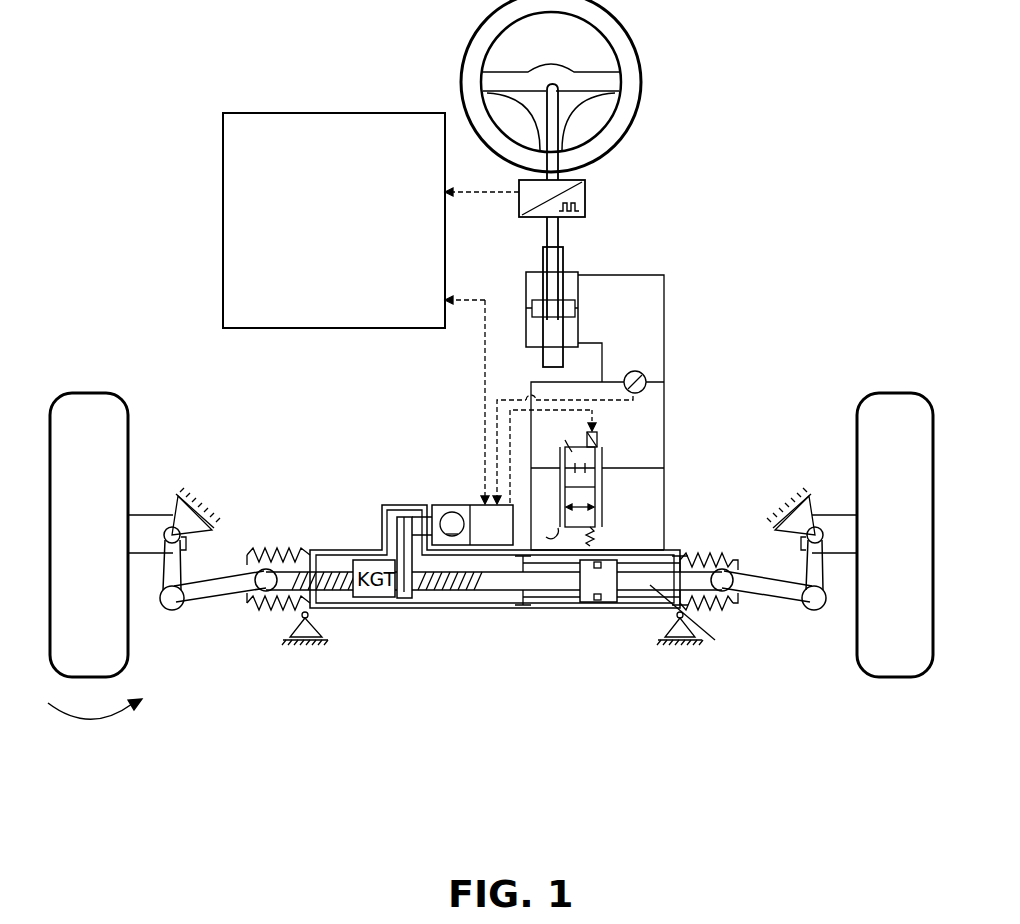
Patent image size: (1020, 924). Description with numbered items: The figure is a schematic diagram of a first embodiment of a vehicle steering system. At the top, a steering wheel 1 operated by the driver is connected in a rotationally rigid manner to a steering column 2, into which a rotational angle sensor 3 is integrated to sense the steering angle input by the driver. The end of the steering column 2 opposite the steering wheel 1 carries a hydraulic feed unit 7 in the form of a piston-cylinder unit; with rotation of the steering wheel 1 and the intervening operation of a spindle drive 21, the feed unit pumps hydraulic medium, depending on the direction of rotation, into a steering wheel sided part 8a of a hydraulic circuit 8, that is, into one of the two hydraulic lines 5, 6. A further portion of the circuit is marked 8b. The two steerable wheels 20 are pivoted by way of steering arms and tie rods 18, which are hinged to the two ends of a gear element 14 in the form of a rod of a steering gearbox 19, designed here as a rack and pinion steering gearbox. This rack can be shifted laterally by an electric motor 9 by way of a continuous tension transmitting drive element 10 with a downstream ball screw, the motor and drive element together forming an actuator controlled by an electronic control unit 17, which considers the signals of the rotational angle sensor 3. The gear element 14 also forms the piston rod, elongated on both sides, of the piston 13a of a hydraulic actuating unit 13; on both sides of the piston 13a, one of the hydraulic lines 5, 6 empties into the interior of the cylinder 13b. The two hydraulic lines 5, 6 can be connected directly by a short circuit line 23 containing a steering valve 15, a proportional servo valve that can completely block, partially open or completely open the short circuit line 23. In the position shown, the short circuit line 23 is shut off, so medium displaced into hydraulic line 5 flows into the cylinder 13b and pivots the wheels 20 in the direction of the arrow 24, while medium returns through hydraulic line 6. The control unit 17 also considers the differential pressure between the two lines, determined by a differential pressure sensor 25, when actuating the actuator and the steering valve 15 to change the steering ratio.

The steering wheel 1 is at (635, 78).
The steering column 2 is at (556, 140).
The rotational angle sensor 3 is at (586, 195).
The spindle drive 21 is at (556, 237).
The hydraulic feed unit 7 is at (585, 309).
The hydraulic line 5 is at (604, 358).
The hydraulic line 6 is at (668, 361).
The hydraulic circuit 8 is at (607, 410).
The steering wheel sided part of hydraulic circuit 8a is at (655, 312).
The hydraulic line 8b is at (652, 512).
The differential pressure sensor 25 is at (648, 382).
The short circuit line 23 is at (640, 466).
The steering valve 15 is at (566, 446).
The electric motor 9 is at (428, 498).
The tension transmitting drive element 10 is at (404, 598).
The steering gearbox 19 is at (452, 616).
The hydraulic actuating unit 13 is at (601, 634).
The piston 13a is at (605, 600).
The cylinder 13b is at (532, 615).
The gear element 14 is at (698, 619).
The electronic control unit 17 is at (343, 257).
The tie rods 18 is at (200, 593).
The steerable wheels 20 is at (118, 470).
The arrow 24 is at (95, 732).